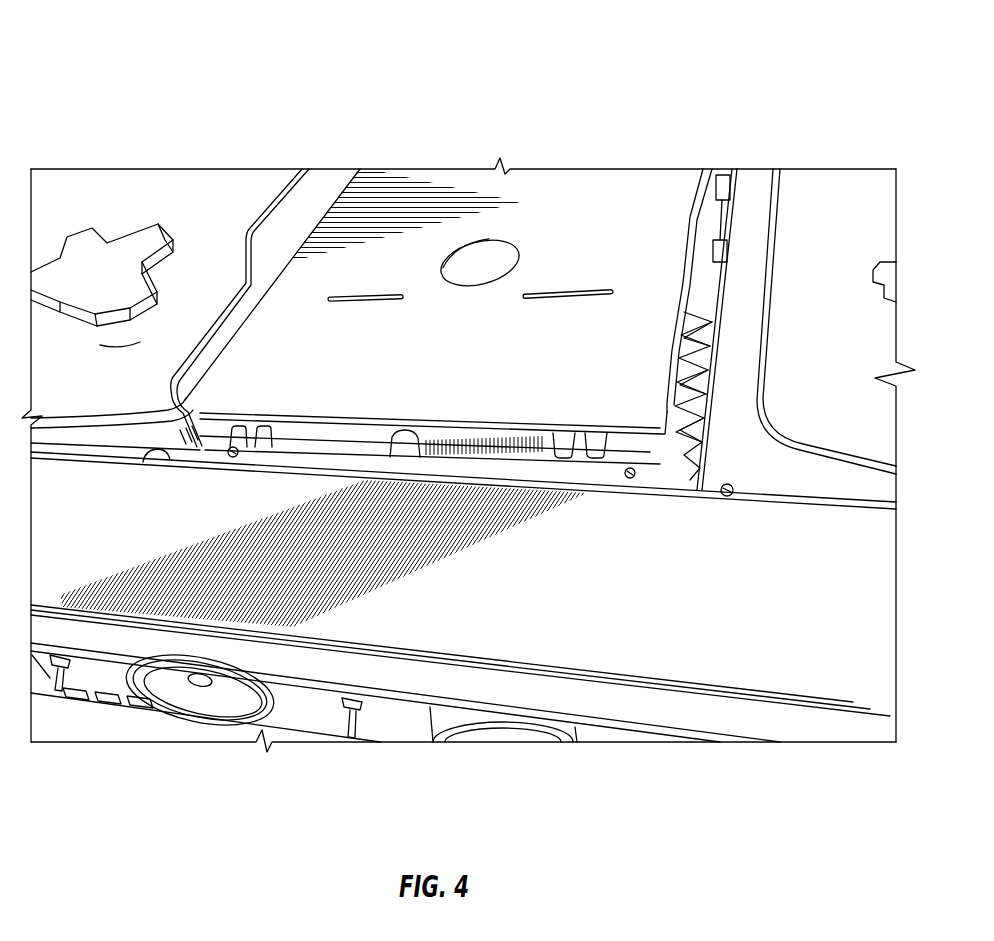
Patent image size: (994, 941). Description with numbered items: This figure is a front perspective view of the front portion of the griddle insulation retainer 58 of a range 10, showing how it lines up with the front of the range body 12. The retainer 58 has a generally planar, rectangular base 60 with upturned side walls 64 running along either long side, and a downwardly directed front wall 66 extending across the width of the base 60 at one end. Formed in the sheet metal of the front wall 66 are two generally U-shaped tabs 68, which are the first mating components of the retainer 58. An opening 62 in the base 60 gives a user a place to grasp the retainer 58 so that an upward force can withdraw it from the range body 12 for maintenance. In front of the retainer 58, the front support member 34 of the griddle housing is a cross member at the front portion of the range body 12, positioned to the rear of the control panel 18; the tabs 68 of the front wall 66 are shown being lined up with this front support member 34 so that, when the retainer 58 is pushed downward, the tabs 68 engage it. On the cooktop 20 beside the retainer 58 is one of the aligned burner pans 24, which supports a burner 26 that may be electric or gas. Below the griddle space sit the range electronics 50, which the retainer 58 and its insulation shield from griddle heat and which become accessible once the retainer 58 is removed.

The range 10 is at (326, 58).
The range body 12 is at (673, 647).
The control panel 18 is at (83, 568).
The cooktop 20 is at (100, 400).
The burner pan 24 is at (753, 183).
The burner 26 is at (90, 248).
The front support member 34 is at (585, 460).
The range electronics 50 is at (677, 440).
The griddle insulation retainer 58 is at (634, 303).
The base 60 is at (426, 266).
The opening 62 is at (483, 267).
The side walls 64 is at (287, 211).
The front wall 66 is at (455, 492).
The tabs 68 is at (235, 458).